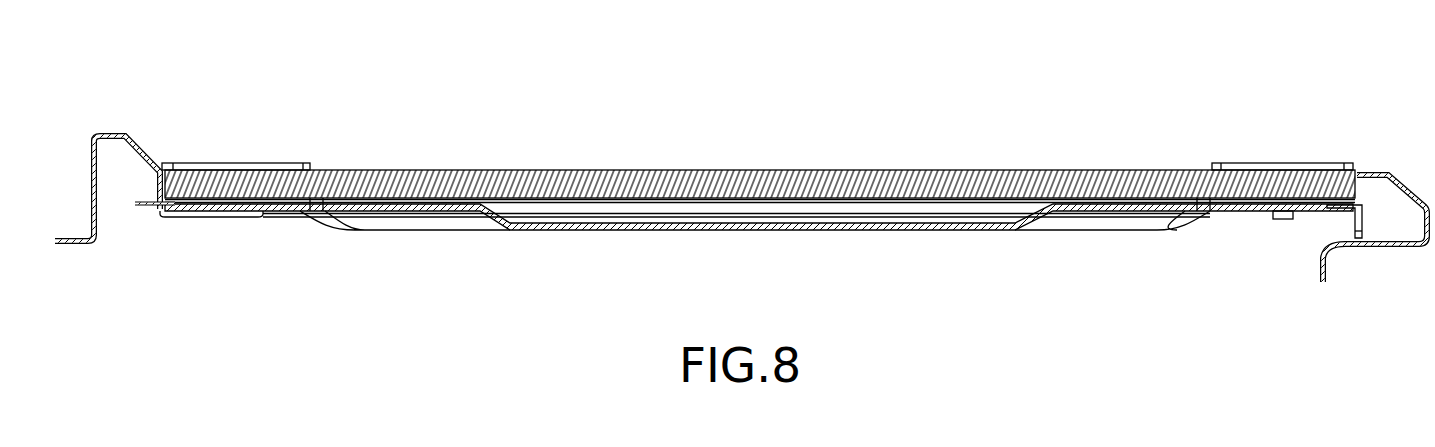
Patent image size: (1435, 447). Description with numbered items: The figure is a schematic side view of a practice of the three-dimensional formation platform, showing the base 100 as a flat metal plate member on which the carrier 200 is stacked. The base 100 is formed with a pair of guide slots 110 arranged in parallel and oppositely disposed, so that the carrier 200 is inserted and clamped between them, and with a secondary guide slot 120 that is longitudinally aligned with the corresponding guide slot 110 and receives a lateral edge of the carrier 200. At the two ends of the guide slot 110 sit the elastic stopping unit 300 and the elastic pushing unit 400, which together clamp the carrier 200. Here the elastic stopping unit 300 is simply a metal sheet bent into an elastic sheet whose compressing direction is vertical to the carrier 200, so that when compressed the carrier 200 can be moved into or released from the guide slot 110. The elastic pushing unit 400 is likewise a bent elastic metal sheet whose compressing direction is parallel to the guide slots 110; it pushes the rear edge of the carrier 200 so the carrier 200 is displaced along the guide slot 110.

The base 100 is at (815, 230).
The guide slot 110 is at (240, 167).
The secondary guide slot 120 is at (1270, 165).
The carrier 200 is at (775, 170).
The elastic stopping unit 300 is at (1388, 166).
The elastic pushing unit 400 is at (112, 124).